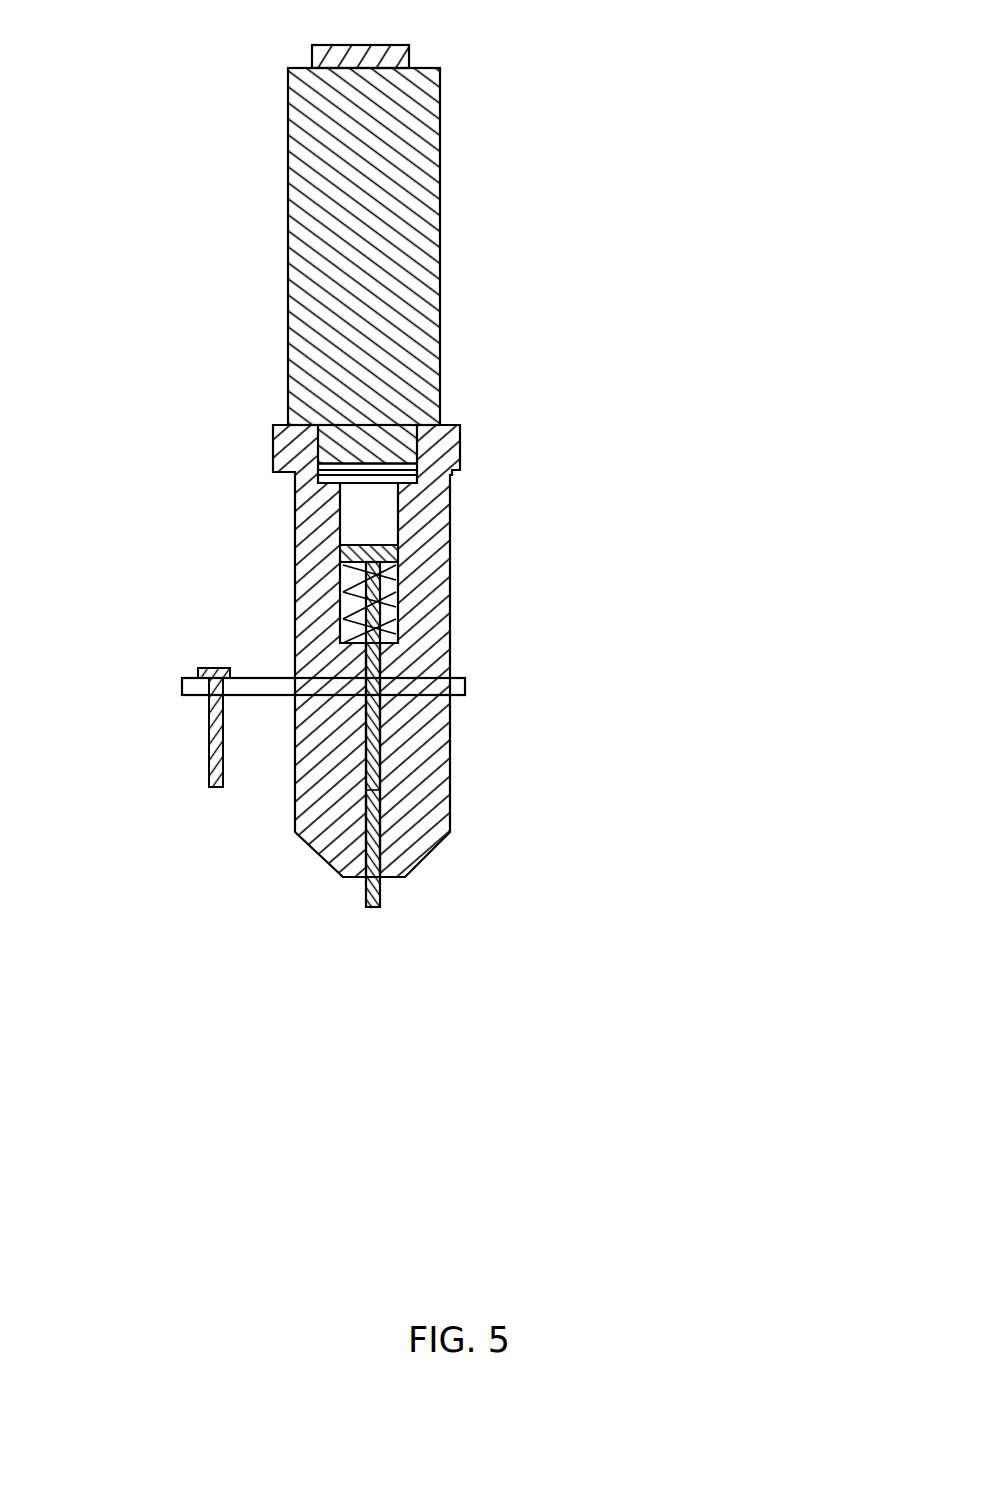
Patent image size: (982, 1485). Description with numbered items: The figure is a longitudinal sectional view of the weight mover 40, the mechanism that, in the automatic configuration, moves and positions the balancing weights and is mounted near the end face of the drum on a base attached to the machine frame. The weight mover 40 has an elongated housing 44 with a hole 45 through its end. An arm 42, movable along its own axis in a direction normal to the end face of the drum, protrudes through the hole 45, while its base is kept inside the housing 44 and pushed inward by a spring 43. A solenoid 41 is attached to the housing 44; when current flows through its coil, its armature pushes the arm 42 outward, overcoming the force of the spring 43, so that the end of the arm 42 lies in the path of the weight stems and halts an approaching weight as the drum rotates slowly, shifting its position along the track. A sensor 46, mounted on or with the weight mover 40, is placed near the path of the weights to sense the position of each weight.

The weight mover 40 is at (454, 522).
The solenoid 41 is at (478, 246).
The arm 42 is at (465, 799).
The spring 43 is at (510, 591).
The housing 44 is at (475, 651).
The hole 45 is at (464, 854).
The sensor 46 is at (270, 780).